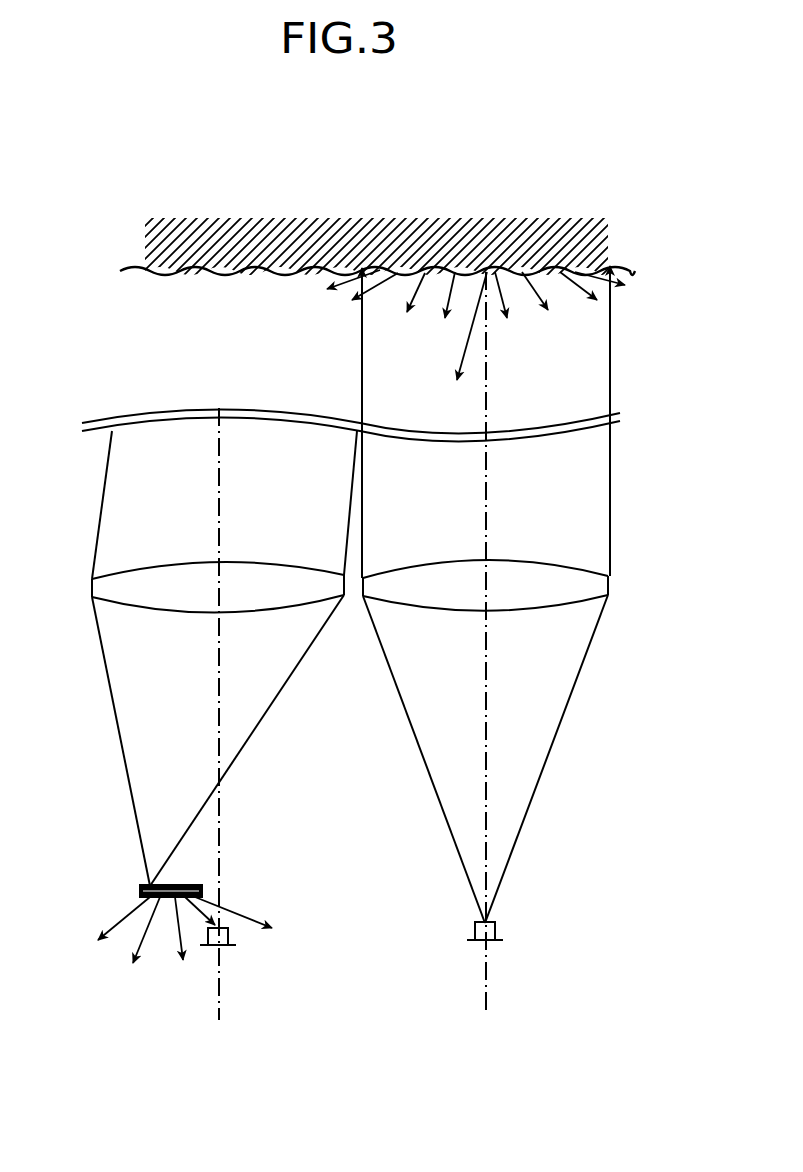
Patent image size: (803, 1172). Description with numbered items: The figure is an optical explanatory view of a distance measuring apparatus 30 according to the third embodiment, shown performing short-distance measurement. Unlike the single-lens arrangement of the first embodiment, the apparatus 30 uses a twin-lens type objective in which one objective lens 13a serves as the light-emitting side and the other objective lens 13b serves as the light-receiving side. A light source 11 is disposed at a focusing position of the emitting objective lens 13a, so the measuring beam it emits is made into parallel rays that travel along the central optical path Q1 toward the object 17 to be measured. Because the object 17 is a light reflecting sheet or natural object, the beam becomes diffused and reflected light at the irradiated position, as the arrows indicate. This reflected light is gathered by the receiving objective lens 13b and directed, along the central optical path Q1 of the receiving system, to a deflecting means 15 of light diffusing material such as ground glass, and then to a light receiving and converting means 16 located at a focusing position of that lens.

The object to be measured 17 is at (600, 242).
The distance measuring apparatus 30 is at (650, 418).
The objective lens 13a is at (600, 585).
The objective lens 13b is at (95, 592).
The deflecting means 15 is at (140, 889).
The light receiving and converting means 16 is at (232, 937).
The light source 11 is at (497, 931).
The central optical path Q1 is at (486, 745).